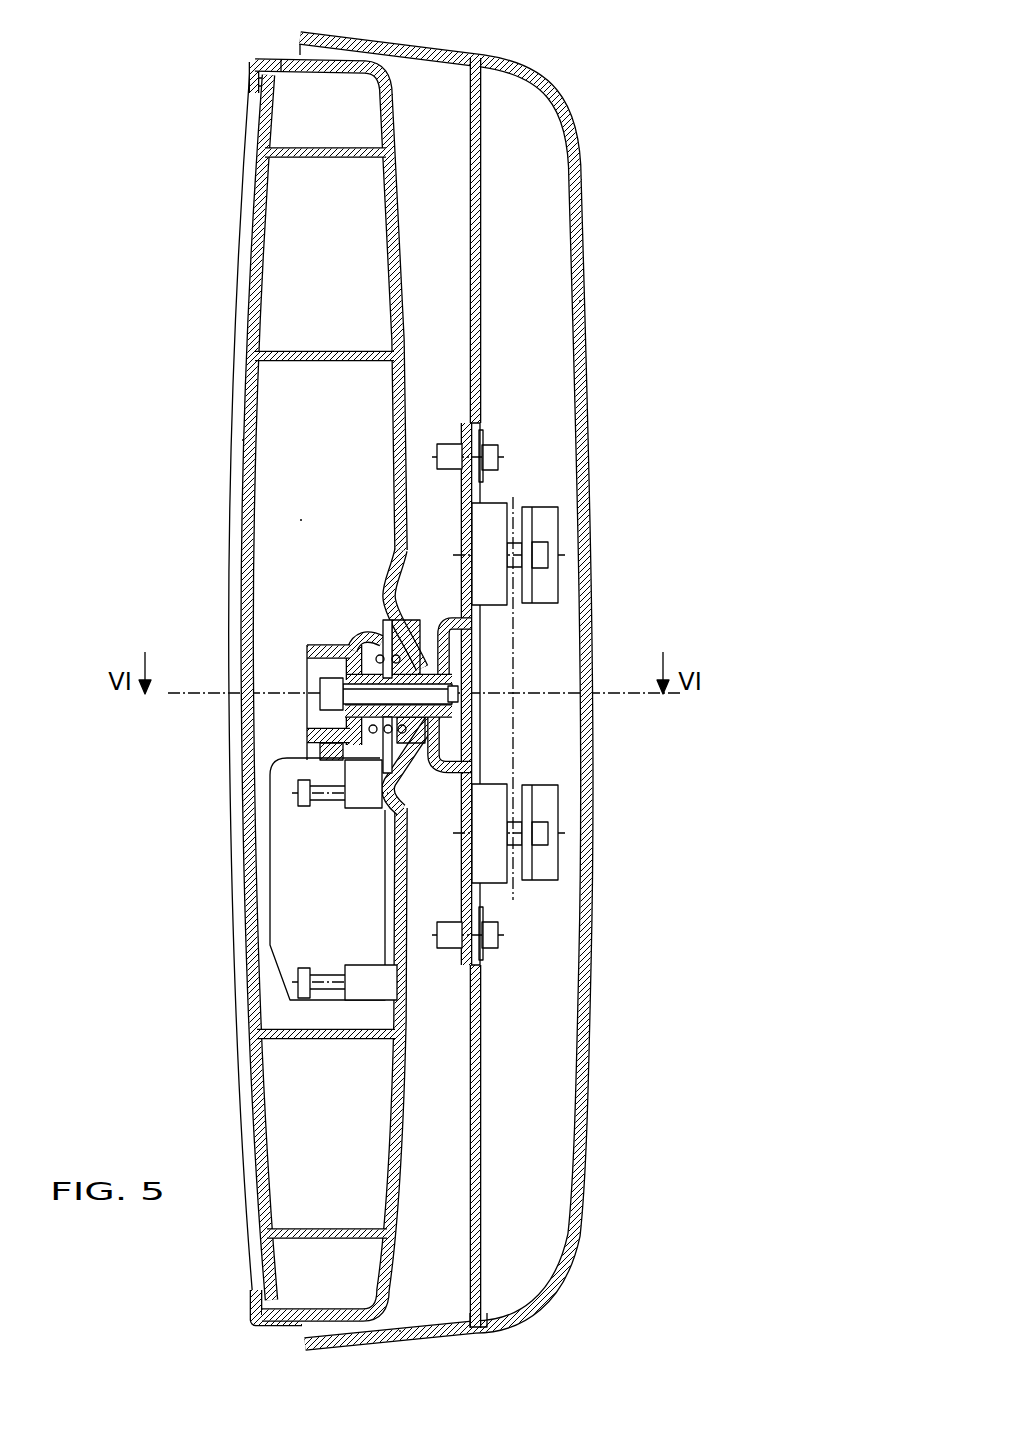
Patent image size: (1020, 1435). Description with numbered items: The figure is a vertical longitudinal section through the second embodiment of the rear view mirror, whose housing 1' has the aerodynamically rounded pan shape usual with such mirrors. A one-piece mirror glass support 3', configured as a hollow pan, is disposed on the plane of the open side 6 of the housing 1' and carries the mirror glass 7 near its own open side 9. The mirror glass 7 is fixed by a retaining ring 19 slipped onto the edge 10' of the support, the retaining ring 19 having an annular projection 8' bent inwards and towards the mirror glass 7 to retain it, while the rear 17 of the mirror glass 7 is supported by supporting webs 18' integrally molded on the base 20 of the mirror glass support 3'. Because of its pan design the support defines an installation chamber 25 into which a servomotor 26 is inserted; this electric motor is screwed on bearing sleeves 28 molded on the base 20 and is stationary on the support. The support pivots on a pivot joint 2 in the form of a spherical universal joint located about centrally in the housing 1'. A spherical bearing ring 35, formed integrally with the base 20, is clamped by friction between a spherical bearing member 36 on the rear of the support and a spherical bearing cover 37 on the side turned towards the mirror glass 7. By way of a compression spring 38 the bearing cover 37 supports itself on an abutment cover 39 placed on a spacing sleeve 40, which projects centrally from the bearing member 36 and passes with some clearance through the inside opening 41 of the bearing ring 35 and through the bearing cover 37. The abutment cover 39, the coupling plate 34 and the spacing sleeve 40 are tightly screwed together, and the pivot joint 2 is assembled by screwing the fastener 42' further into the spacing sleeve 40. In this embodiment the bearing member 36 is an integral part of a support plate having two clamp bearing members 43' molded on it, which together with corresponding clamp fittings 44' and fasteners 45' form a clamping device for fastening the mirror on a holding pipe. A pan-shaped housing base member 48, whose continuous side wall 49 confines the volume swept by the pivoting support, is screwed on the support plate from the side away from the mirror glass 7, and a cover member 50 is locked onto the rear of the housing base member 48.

The housing 1' is at (472, 674).
The pivot joint 2 is at (370, 616).
The mirror glass support 3' is at (426, 1276).
The open side 6 is at (288, 1336).
The mirror glass 7 is at (238, 824).
The annular projection 8' is at (223, 95).
The open side 9 is at (272, 441).
The edge 10' is at (278, 39).
The rear 17 is at (266, 240).
The supporting webs 18' is at (325, 669).
The retaining ring 19 is at (254, 66).
The base 20 is at (398, 1119).
The installation chamber 25 is at (317, 521).
The servomotor 26 is at (290, 882).
The bearing sleeves 28 is at (378, 802).
The coupling plate 34 is at (346, 658).
The spherical bearing ring 35 is at (410, 763).
The spherical bearing member 36 is at (450, 729).
The bearing cover 37 is at (425, 666).
The compression spring 38 is at (375, 737).
The abutment cover 39 is at (360, 718).
The spacing sleeve 40 is at (368, 644).
The inside opening 41 is at (435, 743).
The fastener 42' is at (355, 682).
The clamp bearing members 43' is at (513, 718).
The clamp fittings 44' is at (587, 693).
The fasteners 45' is at (553, 698).
The housing base member 48 is at (481, 241).
The side wall 49 is at (406, 42).
The cover member 50 is at (585, 241).